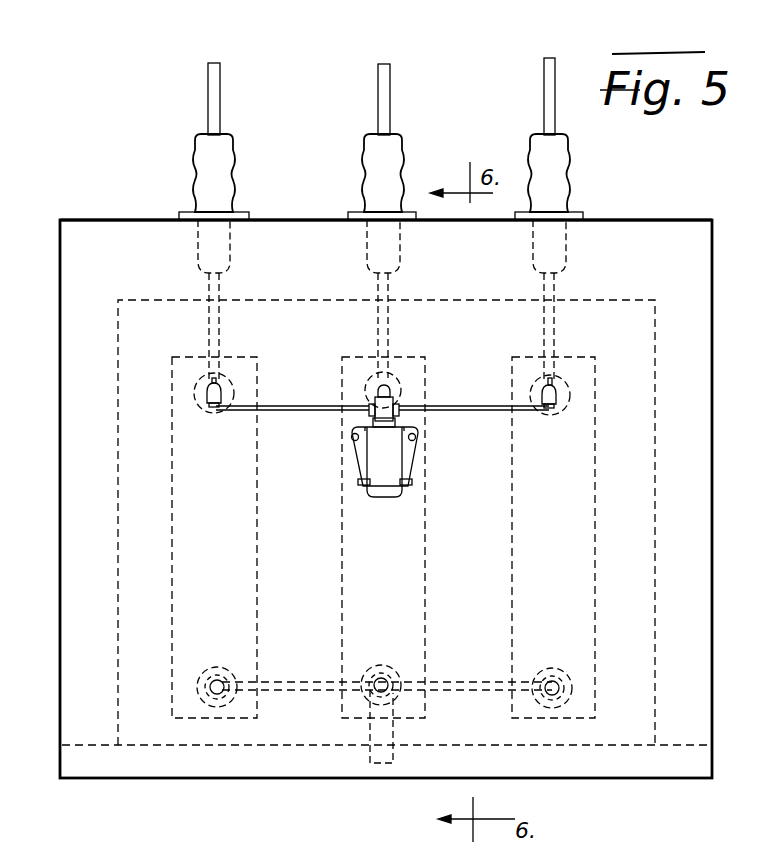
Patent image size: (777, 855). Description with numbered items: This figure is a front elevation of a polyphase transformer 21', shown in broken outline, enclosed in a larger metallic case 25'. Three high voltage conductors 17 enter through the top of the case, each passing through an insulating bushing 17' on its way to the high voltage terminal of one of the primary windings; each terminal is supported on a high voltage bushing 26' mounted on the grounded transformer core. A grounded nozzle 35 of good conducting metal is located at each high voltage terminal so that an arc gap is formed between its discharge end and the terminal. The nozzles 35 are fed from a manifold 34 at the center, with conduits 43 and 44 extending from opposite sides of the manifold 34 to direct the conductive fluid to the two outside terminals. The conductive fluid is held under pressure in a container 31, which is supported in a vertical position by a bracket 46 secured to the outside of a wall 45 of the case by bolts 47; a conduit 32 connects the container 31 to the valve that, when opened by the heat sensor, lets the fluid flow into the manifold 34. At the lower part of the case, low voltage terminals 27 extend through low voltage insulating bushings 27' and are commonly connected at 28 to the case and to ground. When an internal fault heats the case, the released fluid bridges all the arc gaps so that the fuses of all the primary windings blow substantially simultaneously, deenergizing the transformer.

The high voltage conductor 17 is at (381, 96).
The insulating bushing 17' is at (405, 254).
The polyphase transformer 21' is at (386, 491).
The larger metallic case 25' is at (386, 195).
The high voltage bushing 26' is at (418, 382).
The low voltage terminal 27 is at (421, 676).
The low voltage insulating bushing 27' is at (350, 671).
The connection to case 28 is at (372, 755).
The container 31 is at (392, 493).
The conduit 32 is at (348, 425).
The manifold 34 is at (391, 405).
The nozzle 35 is at (207, 387).
The conduit 43 is at (472, 412).
The conduit 44 is at (284, 411).
The wall of the metallic case 45 is at (707, 583).
The bracket 46 is at (413, 463).
The bolts 47 is at (355, 441).